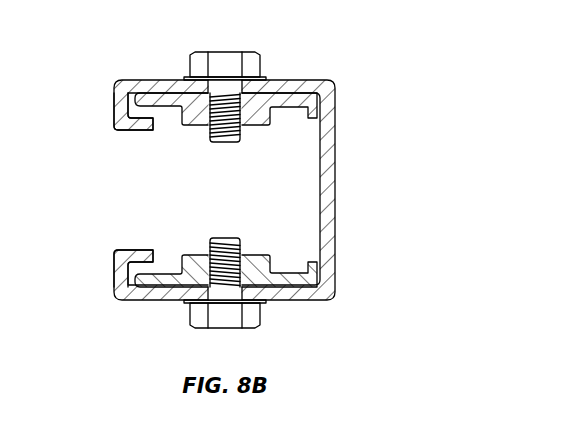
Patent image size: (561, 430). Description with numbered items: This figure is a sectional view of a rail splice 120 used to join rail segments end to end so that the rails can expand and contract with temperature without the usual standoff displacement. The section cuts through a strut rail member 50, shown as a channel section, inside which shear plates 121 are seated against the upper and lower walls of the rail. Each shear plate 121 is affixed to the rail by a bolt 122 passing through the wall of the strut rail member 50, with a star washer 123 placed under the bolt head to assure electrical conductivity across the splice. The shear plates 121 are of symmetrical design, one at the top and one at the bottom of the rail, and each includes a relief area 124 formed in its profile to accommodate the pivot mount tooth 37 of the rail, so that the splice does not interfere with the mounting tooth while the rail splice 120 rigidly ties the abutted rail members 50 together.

The strut rail member 50 is at (327, 183).
The pivot mount tooth 37 is at (133, 108).
The rail splice 120 is at (178, 192).
The shear plate 121 is at (260, 120).
The bolt 122 is at (223, 62).
The star washer 123 is at (190, 79).
The relief area 124 is at (168, 116).